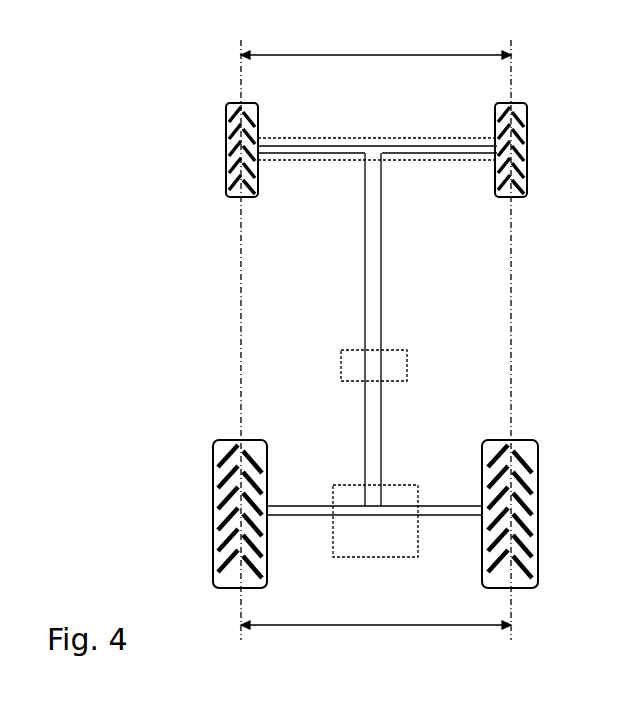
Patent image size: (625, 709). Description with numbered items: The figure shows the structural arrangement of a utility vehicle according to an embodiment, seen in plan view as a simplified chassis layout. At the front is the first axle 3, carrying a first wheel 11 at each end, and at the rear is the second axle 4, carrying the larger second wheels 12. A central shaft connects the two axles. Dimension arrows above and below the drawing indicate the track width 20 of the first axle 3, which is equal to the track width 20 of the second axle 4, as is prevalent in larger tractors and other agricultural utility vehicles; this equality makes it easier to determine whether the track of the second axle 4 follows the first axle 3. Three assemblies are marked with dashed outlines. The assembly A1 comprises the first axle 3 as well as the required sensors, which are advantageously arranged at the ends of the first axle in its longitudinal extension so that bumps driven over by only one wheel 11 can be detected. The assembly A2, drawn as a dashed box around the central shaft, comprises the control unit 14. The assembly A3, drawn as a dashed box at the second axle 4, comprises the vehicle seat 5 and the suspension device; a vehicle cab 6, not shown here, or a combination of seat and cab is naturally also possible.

The track width 20 is at (322, 58).
The assembly A1 is at (472, 138).
The first axle 3 is at (398, 146).
The second axle 4 is at (459, 516).
The first wheel 11 is at (228, 140).
The second wheel 12 is at (213, 472).
The assembly A2 is at (410, 367).
The control unit 14 is at (407, 375).
The assembly A3 is at (361, 522).
The vehicle seat 5 is at (375, 551).
The vehicle cab 6 is at (375, 557).